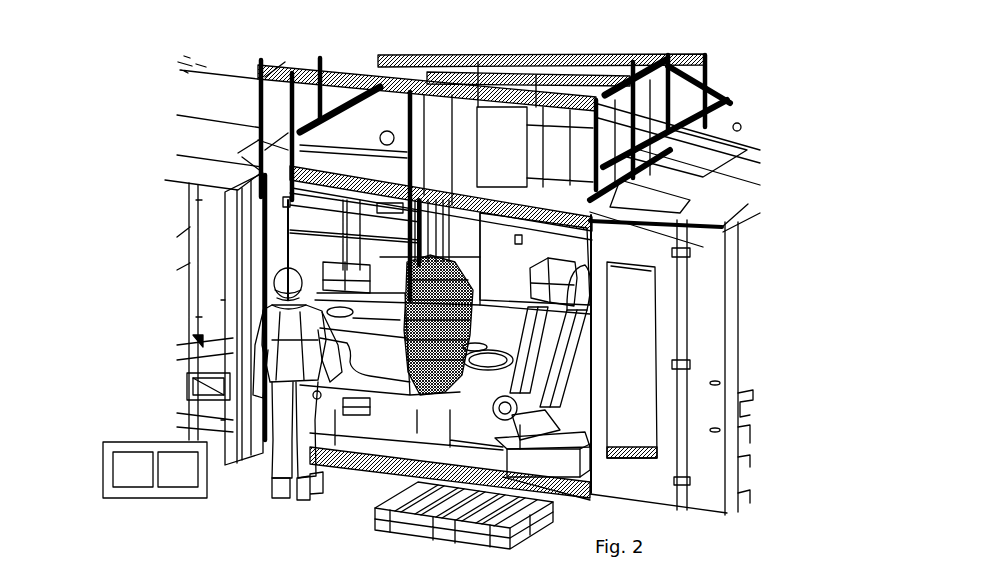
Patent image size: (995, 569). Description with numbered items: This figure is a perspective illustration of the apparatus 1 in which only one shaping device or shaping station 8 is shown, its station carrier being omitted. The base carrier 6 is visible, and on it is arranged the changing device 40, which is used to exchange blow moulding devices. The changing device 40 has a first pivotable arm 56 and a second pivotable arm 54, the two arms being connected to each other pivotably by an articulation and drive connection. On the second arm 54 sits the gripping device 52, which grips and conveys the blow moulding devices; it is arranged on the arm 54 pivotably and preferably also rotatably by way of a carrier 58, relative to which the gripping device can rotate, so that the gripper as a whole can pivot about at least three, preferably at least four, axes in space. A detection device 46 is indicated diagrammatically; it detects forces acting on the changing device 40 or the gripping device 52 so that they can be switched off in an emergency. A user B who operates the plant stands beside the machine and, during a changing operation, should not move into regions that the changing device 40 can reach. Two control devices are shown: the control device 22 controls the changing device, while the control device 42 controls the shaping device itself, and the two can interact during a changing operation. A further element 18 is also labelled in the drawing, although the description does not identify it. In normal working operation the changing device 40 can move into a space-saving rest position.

The apparatus 1 is at (108, 76).
The shaping device 8 is at (395, 289).
The user B is at (250, 355).
The rear wall panel 18 is at (512, 253).
The carrier 58 is at (577, 290).
The second pivotable arm 54 is at (530, 353).
The first pivotable arm 56 is at (573, 353).
The detection device 46 is at (577, 397).
The changing device 40 is at (570, 380).
The gripping device 52 is at (500, 402).
The base carrier 6 is at (490, 442).
The control device for the shaping device 42 is at (155, 470).
The control device for the changing device 22 is at (178, 469).